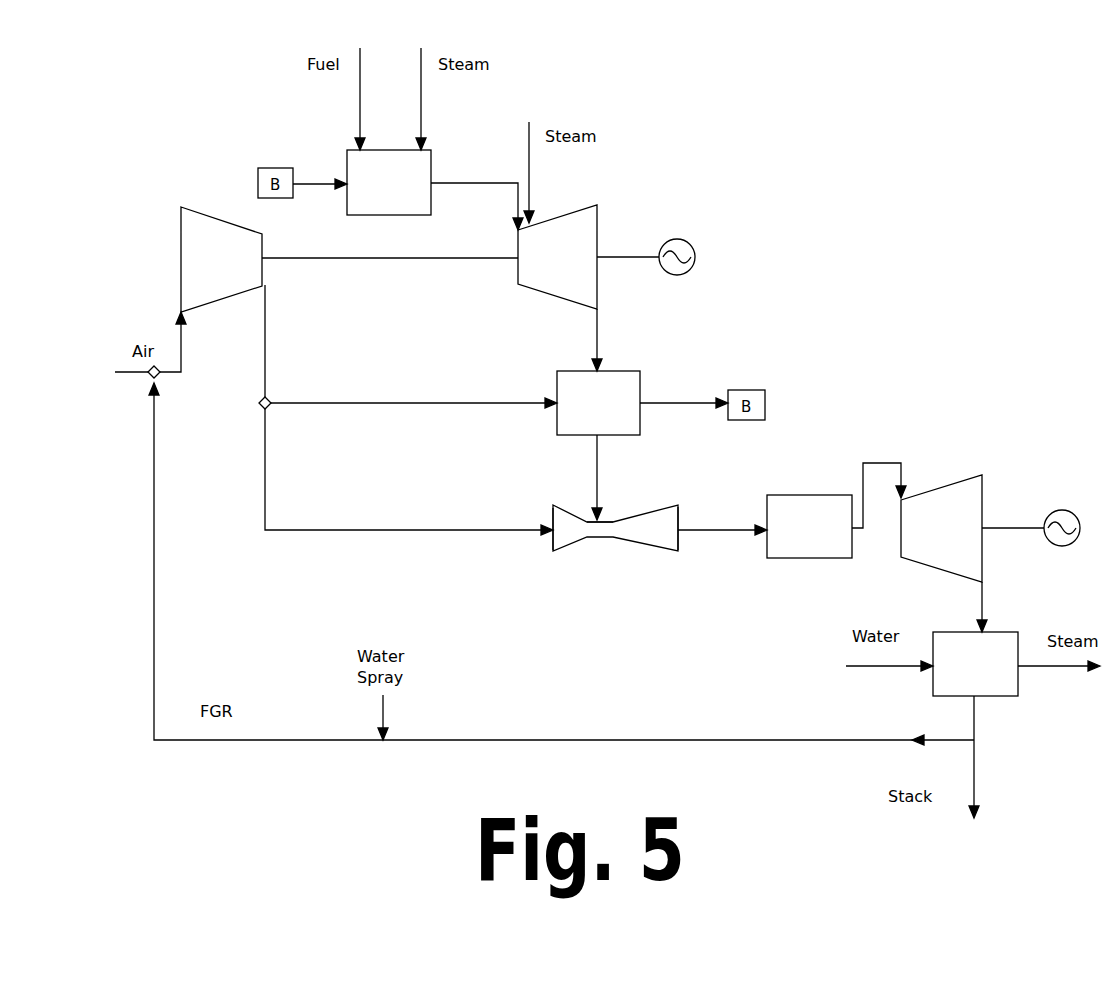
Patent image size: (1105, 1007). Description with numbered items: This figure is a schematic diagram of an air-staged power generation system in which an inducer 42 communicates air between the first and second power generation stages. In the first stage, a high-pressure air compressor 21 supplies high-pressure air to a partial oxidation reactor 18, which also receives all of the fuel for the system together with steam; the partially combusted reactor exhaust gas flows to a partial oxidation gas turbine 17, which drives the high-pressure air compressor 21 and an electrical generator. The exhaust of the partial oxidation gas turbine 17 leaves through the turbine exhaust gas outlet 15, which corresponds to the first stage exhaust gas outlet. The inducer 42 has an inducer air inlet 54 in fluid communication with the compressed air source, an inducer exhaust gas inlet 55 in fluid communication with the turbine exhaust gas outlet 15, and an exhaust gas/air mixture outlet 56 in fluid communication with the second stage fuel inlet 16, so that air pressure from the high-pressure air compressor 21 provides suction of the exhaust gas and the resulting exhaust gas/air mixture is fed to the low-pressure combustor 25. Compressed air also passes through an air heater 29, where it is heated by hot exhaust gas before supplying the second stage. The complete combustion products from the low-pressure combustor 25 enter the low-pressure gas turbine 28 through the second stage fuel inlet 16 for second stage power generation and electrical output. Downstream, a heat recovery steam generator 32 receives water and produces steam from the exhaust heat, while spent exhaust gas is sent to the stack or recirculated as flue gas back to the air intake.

The first stage exhaust gas outlet 15 is at (597, 308).
The second stage fuel inlet 16 is at (903, 495).
The partial oxidation gas turbine 17 is at (598, 213).
The partial oxidation reactor 18 is at (432, 155).
The high-pressure air compressor 21 is at (198, 207).
The low-pressure combustor 25 is at (800, 560).
The low-pressure gas turbine 28 is at (955, 477).
The air heater 29 is at (642, 383).
The heat recovery steam generator 32 is at (1020, 678).
The inducer 42 is at (570, 545).
The inducer air inlet 54 is at (552, 522).
The inducer exhaust gas inlet 55 is at (612, 520).
The exhaust gas/air mixture outlet 56 is at (680, 530).